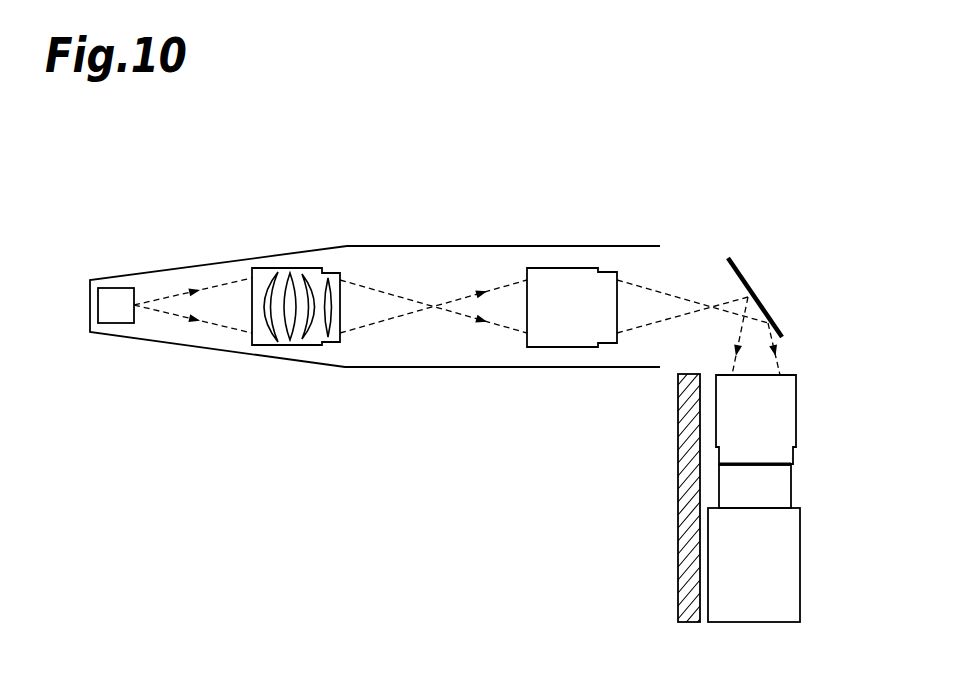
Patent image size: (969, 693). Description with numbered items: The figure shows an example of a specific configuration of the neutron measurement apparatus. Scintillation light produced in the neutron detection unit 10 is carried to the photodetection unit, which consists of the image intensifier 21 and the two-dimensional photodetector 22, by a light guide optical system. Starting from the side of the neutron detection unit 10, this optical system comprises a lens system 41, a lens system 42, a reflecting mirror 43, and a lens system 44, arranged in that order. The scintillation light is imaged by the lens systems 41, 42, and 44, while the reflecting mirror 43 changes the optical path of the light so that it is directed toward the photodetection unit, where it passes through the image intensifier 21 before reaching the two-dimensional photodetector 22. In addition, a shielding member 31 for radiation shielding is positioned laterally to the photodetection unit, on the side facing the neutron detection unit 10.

The neutron detection unit 10 is at (120, 287).
The lens system 41 is at (287, 268).
The lens system 42 is at (567, 268).
The reflecting mirror 43 is at (748, 281).
The shielding member 31 is at (688, 450).
The lens system 44 is at (782, 415).
The image intensifier 21 is at (782, 482).
The two-dimensional photodetector 22 is at (790, 580).